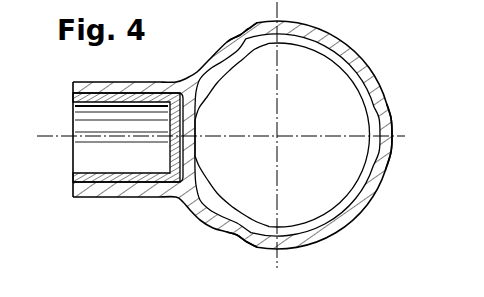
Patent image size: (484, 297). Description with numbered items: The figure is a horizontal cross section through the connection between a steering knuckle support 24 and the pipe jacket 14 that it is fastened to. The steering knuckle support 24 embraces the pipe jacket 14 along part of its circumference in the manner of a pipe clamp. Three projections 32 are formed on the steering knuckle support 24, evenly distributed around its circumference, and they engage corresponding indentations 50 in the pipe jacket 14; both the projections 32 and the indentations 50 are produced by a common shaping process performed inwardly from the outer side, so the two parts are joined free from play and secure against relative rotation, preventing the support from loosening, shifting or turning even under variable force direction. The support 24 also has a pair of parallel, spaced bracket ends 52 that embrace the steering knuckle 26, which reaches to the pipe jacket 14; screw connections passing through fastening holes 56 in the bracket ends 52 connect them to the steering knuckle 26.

The pipe jacket 14 is at (329, 36).
The steering knuckle support 24 is at (353, 56).
The steering knuckle 26 is at (72, 100).
The projections 32 is at (229, 42).
The indentations 50 is at (237, 56).
The bracket ends 52 is at (85, 88).
The fastening holes 56 is at (126, 96).